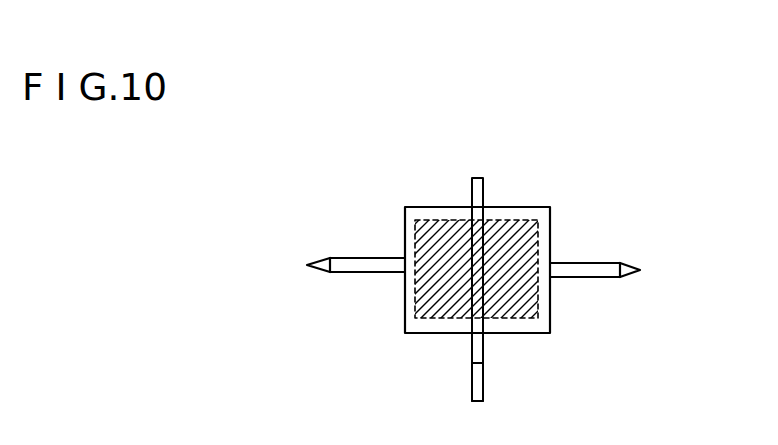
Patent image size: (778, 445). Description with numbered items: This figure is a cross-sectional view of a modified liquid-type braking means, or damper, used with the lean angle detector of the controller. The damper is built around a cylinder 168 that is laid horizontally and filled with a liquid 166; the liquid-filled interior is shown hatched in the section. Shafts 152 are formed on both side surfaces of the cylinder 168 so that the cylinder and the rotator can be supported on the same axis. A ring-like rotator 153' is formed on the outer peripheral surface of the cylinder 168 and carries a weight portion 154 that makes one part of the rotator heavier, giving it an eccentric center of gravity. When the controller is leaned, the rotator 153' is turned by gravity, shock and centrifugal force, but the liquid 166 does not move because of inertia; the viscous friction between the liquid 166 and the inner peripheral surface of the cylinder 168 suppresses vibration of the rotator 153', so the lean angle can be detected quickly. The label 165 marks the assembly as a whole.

The terminal block assembly 165 is at (454, 157).
The cylinder 168 is at (547, 183).
The liquid 166 is at (524, 310).
The shaft 152 is at (372, 258).
The ring-like rotator 153' is at (513, 294).
The weight portion 154 is at (470, 382).